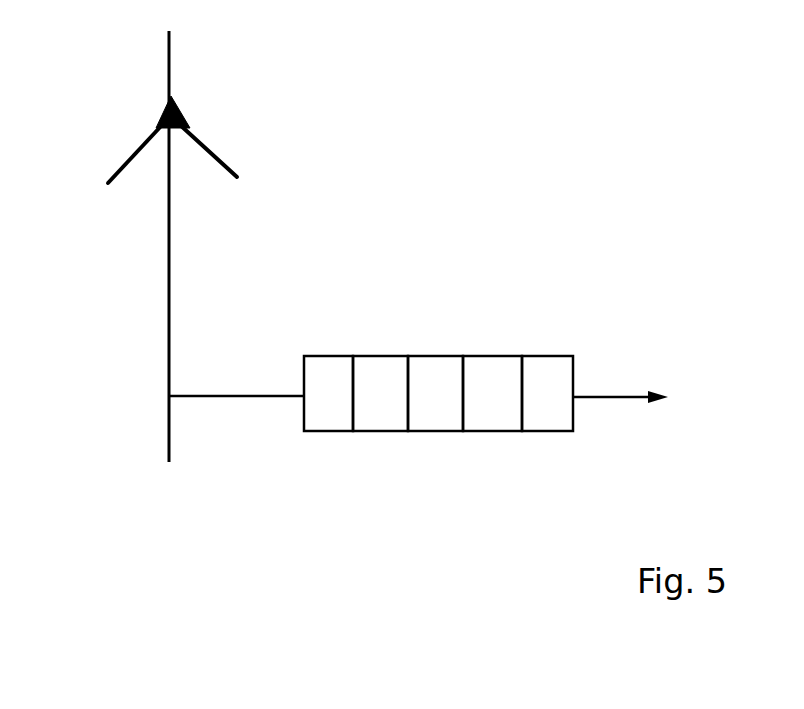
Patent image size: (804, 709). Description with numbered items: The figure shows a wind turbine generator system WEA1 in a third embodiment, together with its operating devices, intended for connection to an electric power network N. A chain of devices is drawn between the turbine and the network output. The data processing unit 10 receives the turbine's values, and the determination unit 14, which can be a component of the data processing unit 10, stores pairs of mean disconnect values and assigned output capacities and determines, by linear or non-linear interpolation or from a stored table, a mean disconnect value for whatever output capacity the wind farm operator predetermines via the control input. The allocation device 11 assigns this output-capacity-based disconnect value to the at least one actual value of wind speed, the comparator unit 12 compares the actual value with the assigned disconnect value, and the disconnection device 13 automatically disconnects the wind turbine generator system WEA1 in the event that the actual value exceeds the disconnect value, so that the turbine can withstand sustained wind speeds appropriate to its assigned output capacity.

The wind turbine generator system WEA1 is at (139, 248).
The data processing unit 10 is at (328, 393).
The allocation device 11 is at (380, 393).
The comparator unit 12 is at (435, 393).
The disconnection device 13 is at (492, 393).
The determination unit 14 is at (547, 393).
The output to grid / network N is at (648, 401).